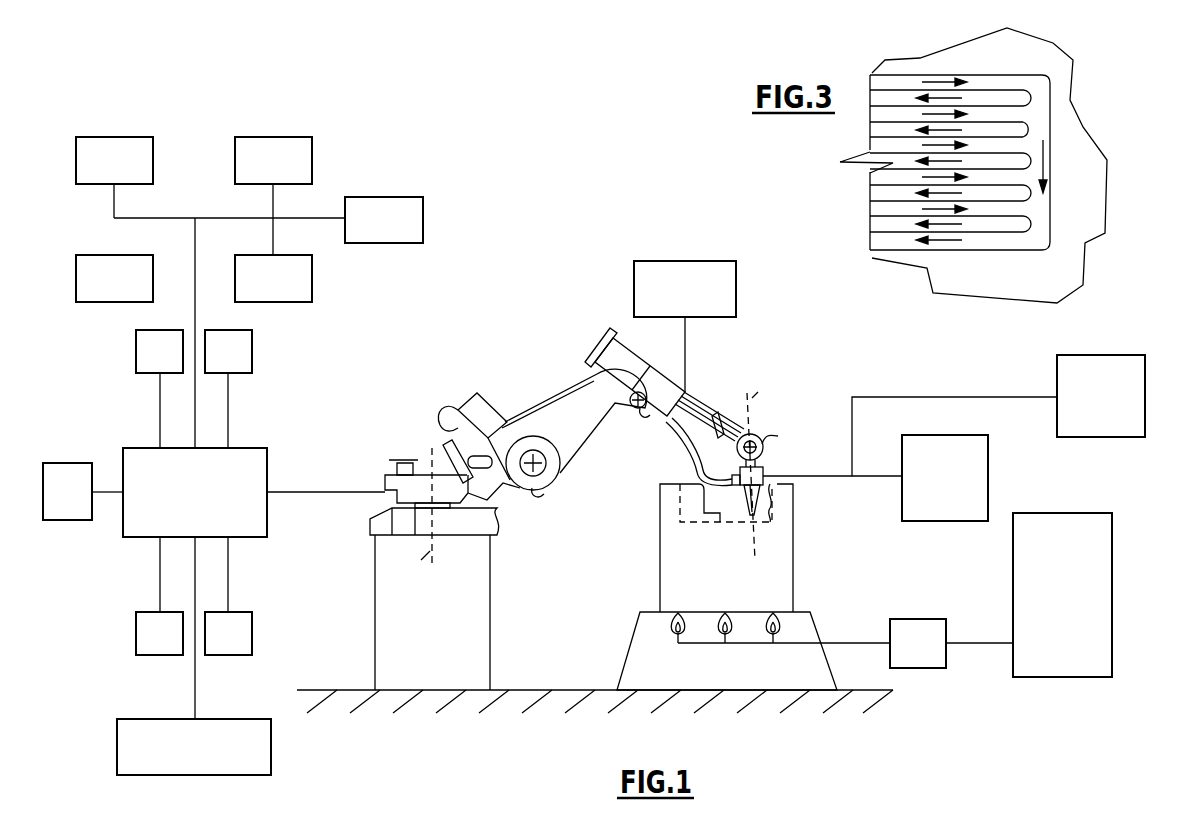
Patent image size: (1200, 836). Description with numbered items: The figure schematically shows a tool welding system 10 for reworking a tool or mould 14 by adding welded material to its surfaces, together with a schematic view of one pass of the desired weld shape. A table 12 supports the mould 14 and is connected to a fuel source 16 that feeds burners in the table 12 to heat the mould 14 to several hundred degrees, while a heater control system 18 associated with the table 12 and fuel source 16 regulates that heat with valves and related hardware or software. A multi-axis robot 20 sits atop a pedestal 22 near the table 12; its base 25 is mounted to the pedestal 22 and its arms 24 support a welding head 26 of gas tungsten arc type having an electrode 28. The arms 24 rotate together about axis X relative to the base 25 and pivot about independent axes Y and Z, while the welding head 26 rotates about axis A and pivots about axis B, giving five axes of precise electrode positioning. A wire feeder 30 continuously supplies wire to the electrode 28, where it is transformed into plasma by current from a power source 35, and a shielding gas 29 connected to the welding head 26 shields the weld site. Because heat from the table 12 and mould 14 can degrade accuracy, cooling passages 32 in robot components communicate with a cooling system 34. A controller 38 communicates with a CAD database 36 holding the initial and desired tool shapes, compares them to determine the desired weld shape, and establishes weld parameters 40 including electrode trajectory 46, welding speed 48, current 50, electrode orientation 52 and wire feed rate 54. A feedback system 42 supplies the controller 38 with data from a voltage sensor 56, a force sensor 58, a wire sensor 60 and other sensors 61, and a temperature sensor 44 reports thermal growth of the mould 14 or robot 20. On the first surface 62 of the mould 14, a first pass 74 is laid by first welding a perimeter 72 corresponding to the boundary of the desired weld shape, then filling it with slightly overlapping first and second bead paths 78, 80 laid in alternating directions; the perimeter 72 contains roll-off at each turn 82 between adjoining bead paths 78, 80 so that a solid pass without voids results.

In FIG. 1, the welding system 10 is at (842, 352).
In FIG. 1, the table 12 is at (812, 612).
In FIG. 1, the tool or mould 14 is at (793, 548).
In FIG. 3, the tool or mould 14 is at (1085, 162).
In FIG. 1, the fuel source 16 is at (1113, 562).
In FIG. 1, the heater control system 18 is at (918, 619).
In FIG. 1, the multi-axis robot 20 is at (458, 388).
In FIG. 1, the pedestal 22 is at (492, 592).
In FIG. 1, the arms 24 is at (672, 416).
In FIG. 1, the base 25 is at (392, 480).
In FIG. 1, the welding head 26 is at (766, 479).
In FIG. 1, the electrode 28 is at (748, 545).
In FIG. 1, the shielding gas 29 is at (990, 478).
In FIG. 1, the wire feeder 30 is at (732, 520).
In FIG. 1, the cooling passages 32 is at (691, 407).
In FIG. 1, the cooling system 34 is at (746, 282).
In FIG. 1, the power source 35 is at (1146, 395).
In FIG. 1, the CAD database 36 is at (271, 748).
In FIG. 1, the controller 38 is at (267, 520).
In FIG. 1, the weld parameters 40 is at (212, 110).
In FIG. 1, the feedback system 42 is at (90, 598).
In FIG. 1, the temperature sensor 44 is at (136, 350).
In FIG. 1, the electrode trajectory 46 is at (114, 137).
In FIG. 1, the welding speed 48 is at (273, 137).
In FIG. 1, the current 50 is at (79, 255).
In FIG. 1, the electrode orientation 52 is at (383, 197).
In FIG. 1, the wire feed rate 54 is at (312, 278).
In FIG. 1, the voltage sensor 56 is at (252, 350).
In FIG. 1, the force sensor 58 is at (136, 630).
In FIG. 1, the wire sensor 60 is at (252, 632).
In FIG. 1, the other sensors 61 is at (68, 520).
In FIG. 3, the first surface 62 is at (1003, 66).
In FIG. 3, the perimeter 72 is at (1045, 66).
In FIG. 3, the first pass 74 is at (1060, 124).
In FIG. 3, the first bead path 78 is at (973, 225).
In FIG. 3, the second bead path 80 is at (1005, 210).
In FIG. 3, the turn 82 is at (1030, 205).